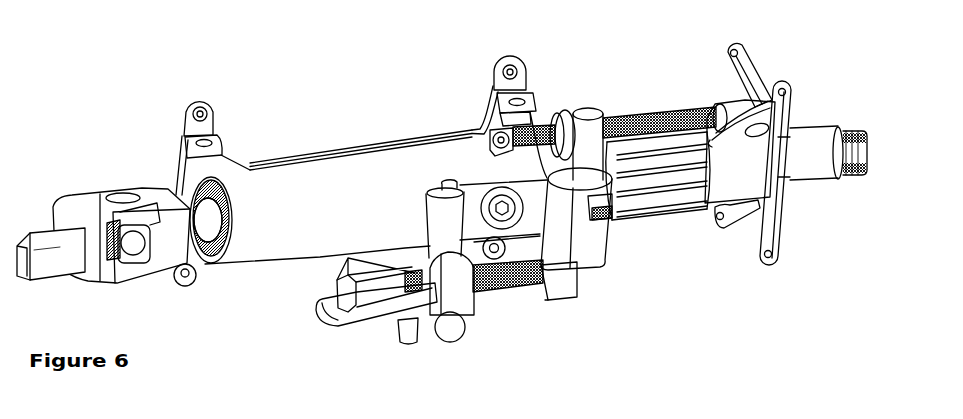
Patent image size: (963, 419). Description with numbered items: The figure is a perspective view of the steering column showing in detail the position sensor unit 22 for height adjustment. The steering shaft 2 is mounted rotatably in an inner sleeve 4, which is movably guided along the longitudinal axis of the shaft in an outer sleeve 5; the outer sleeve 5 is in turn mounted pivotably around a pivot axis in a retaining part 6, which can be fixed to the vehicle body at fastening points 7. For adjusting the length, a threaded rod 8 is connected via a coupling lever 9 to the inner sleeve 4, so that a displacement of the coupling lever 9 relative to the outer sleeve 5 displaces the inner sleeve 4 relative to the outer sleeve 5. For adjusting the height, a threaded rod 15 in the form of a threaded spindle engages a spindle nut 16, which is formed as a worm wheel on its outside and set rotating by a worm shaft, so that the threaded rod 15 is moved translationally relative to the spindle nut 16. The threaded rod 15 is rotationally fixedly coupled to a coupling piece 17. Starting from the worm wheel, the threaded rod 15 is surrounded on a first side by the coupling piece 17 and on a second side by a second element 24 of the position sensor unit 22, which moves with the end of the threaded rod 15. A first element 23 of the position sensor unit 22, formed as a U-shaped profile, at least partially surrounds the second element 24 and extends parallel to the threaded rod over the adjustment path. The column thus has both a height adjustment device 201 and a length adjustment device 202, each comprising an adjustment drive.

The steering shaft 2 is at (820, 145).
The inner sleeve 4 is at (735, 208).
The outer sleeve 5 is at (350, 185).
The retaining part 6 is at (290, 153).
The fastening points 7 is at (196, 97).
The threaded rod 8 is at (646, 142).
The coupling lever 9 is at (740, 138).
The threaded rod 15 is at (493, 290).
The spindle nut 16 is at (450, 287).
The coupling piece 17 is at (566, 281).
The position sensor unit 22 is at (389, 334).
The first element 23 is at (372, 318).
The second element 24 is at (338, 293).
The height adjustment device 201 is at (551, 345).
The length adjustment device 202 is at (637, 104).